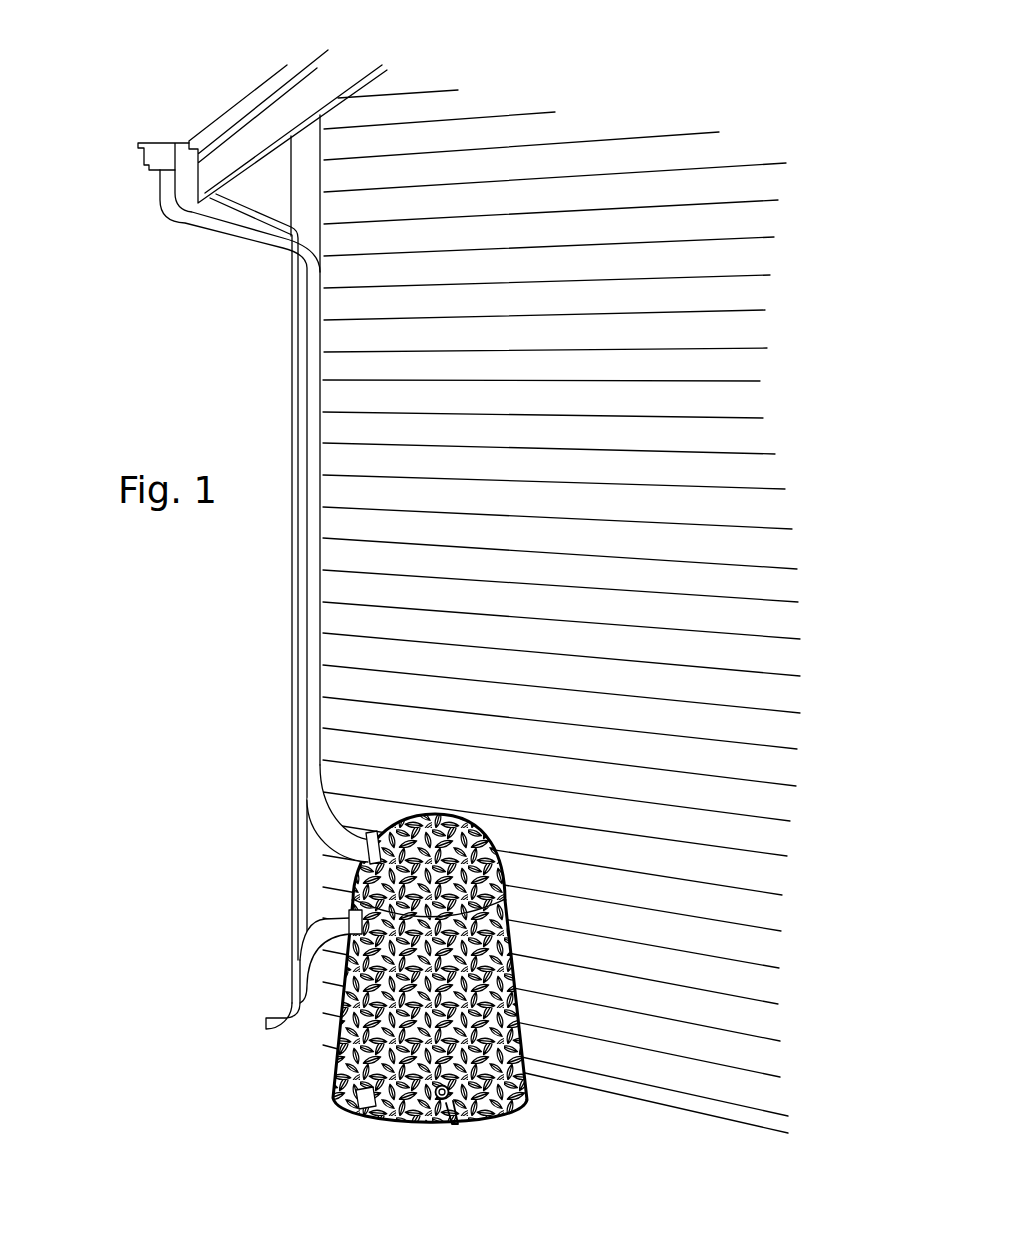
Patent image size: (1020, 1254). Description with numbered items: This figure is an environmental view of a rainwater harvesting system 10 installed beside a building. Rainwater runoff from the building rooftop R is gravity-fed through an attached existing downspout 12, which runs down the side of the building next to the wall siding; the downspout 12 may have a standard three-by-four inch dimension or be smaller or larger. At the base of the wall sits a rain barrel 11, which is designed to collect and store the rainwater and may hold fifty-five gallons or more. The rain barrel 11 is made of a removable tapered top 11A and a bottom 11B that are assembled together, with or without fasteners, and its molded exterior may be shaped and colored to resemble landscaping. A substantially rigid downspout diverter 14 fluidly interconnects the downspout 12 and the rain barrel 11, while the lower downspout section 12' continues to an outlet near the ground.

The building rooftop R is at (227, 115).
The rainwater harvesting system 10 is at (160, 398).
The rain barrel 11 is at (470, 988).
The removable tapered top 11A is at (474, 823).
The bottom 11B is at (514, 977).
The existing downspout 12 is at (259, 573).
The downspout outlet 12' is at (250, 994).
The downspout diverter 14 is at (303, 878).